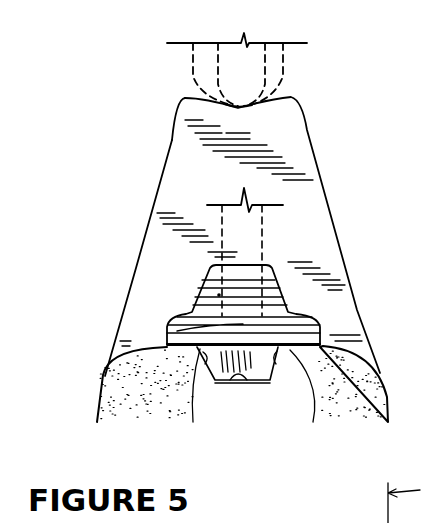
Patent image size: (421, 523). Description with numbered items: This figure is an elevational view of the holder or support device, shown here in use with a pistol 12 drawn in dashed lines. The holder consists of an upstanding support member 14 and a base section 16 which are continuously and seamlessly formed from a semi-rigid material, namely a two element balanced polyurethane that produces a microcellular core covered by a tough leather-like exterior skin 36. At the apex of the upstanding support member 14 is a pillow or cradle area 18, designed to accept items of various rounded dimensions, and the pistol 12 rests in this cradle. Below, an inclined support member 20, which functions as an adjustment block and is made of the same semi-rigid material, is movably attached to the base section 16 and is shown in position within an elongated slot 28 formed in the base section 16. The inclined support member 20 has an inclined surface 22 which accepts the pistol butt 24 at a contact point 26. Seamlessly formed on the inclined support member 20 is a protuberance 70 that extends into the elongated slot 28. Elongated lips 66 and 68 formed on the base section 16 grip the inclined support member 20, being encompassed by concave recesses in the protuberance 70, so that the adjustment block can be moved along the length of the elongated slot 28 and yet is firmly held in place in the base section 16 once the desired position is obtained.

The pistol 12 is at (285, 70).
The upstanding support member 14 is at (213, 185).
The base section 16 is at (97, 398).
The pillow or cradle area 18 is at (250, 108).
The inclined support member 20 is at (192, 312).
The inclined surface 22 is at (217, 295).
The pistol butt 24 is at (223, 245).
The contact point 26 is at (167, 332).
The elongated slot 28 is at (250, 383).
The exterior skin 36 is at (157, 190).
The elongated lip 66 is at (197, 423).
The elongated lip 68 is at (315, 422).
The protuberance 70 is at (250, 362).